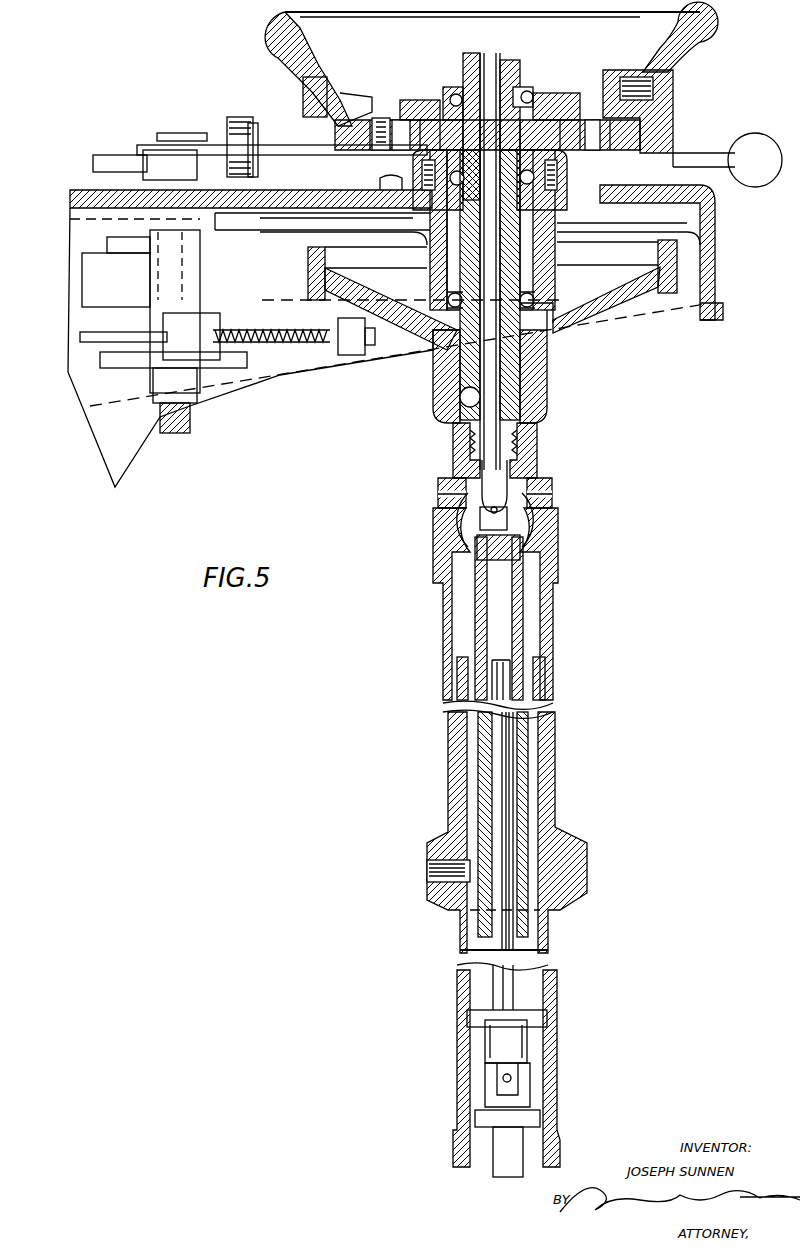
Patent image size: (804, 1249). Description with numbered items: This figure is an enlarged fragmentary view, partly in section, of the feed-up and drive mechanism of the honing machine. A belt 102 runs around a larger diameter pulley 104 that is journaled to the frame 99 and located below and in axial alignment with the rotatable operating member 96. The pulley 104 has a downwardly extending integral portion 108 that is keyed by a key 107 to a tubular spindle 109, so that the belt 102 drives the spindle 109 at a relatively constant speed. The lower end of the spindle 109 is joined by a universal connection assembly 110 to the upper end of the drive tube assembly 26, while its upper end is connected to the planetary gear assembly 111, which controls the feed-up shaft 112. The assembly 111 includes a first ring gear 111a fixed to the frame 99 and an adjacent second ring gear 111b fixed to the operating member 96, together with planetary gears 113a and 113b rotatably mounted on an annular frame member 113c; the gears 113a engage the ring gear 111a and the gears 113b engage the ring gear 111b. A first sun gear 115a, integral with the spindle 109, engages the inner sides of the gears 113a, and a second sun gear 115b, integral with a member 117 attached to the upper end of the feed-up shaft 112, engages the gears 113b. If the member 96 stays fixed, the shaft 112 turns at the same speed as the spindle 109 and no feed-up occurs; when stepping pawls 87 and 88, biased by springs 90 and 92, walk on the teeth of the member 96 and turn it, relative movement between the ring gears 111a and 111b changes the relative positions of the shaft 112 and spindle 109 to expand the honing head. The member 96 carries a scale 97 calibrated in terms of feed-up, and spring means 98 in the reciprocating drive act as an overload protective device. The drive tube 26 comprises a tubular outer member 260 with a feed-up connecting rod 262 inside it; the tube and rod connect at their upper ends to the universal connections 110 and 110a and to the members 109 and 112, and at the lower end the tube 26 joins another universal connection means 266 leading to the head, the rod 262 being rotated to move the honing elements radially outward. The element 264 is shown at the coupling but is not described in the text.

The drive tube assembly 26 is at (568, 658).
The stepping pawl 87 is at (268, 150).
The stepping pawl 88 is at (300, 148).
The spring 90 is at (240, 117).
The spring 92 is at (230, 155).
The rotatable operating member 96 is at (700, 40).
The scale 97 is at (680, 136).
The spring means 98 is at (280, 338).
The frame 99 is at (335, 211).
The belt 102 is at (241, 297).
The pulley 104 is at (660, 278).
The key 107 is at (455, 428).
The downwardly extending integral portion 108 is at (548, 403).
The tubular spindle 109 is at (462, 390).
The universal connection assembly 110 is at (554, 471).
The universal connection 110a is at (473, 511).
The planetary gear assembly 111 is at (566, 98).
The first ring gear 111a is at (370, 160).
The second ring gear 111b is at (374, 122).
The feed-up shaft 112 is at (493, 58).
The planetary gears 113a is at (422, 118).
The planetary gears 113b is at (565, 128).
The annular frame member 113c is at (403, 118).
The first sun gear 115a is at (563, 160).
The second sun gear 115b is at (545, 122).
The member 117 is at (466, 60).
The tubular outer member 260 is at (448, 796).
The feed-up connecting rod 262 is at (478, 602).
The slot 264 is at (556, 496).
The universal connection means 266 is at (450, 1135).